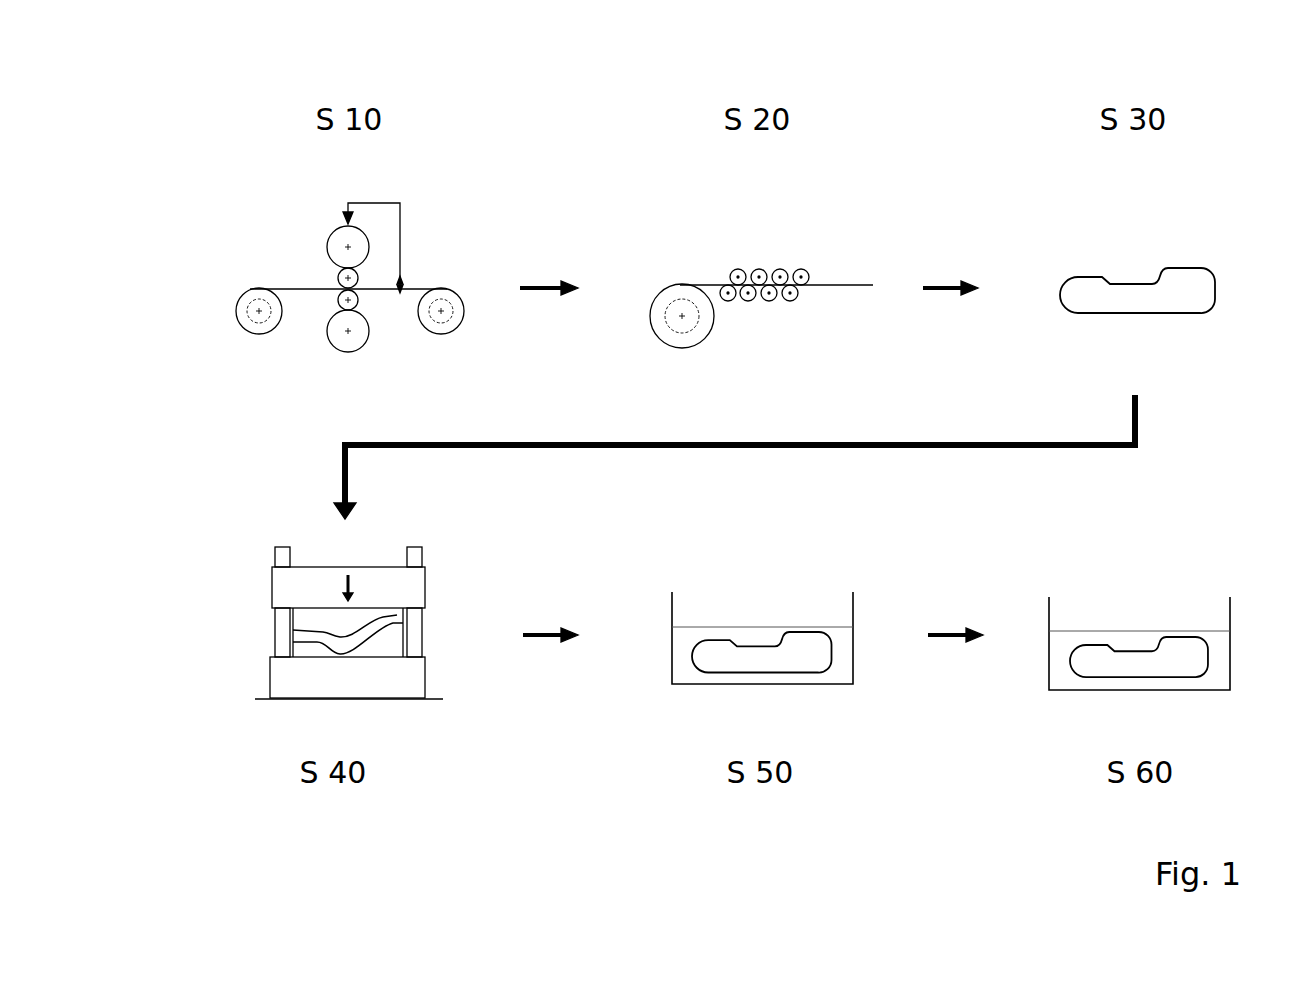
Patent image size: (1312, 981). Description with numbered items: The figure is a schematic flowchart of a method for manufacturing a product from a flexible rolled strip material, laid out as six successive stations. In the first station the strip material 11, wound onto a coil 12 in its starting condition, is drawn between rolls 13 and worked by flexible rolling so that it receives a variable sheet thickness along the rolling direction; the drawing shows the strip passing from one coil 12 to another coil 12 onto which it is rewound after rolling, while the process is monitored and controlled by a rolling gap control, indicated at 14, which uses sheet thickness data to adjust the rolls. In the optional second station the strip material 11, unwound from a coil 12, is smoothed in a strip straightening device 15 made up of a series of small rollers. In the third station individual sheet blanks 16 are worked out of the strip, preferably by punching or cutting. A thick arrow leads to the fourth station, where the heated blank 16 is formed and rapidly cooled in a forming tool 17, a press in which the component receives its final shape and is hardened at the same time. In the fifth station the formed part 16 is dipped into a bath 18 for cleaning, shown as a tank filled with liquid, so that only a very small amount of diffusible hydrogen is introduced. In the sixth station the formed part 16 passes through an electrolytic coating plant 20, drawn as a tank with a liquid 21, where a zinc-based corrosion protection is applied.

The strip material 11 is at (293, 288).
The coil 12 is at (242, 307).
The rolls 13 is at (316, 222).
The roll gap adjustment 14 is at (407, 223).
The strip straightening device 15 is at (730, 244).
The sheet blank 16 is at (1125, 295).
The forming tool 17 is at (376, 552).
The treatment bath 18 is at (853, 610).
The electrolytic coating plant 20 is at (1236, 605).
The liquid 21 is at (1223, 662).